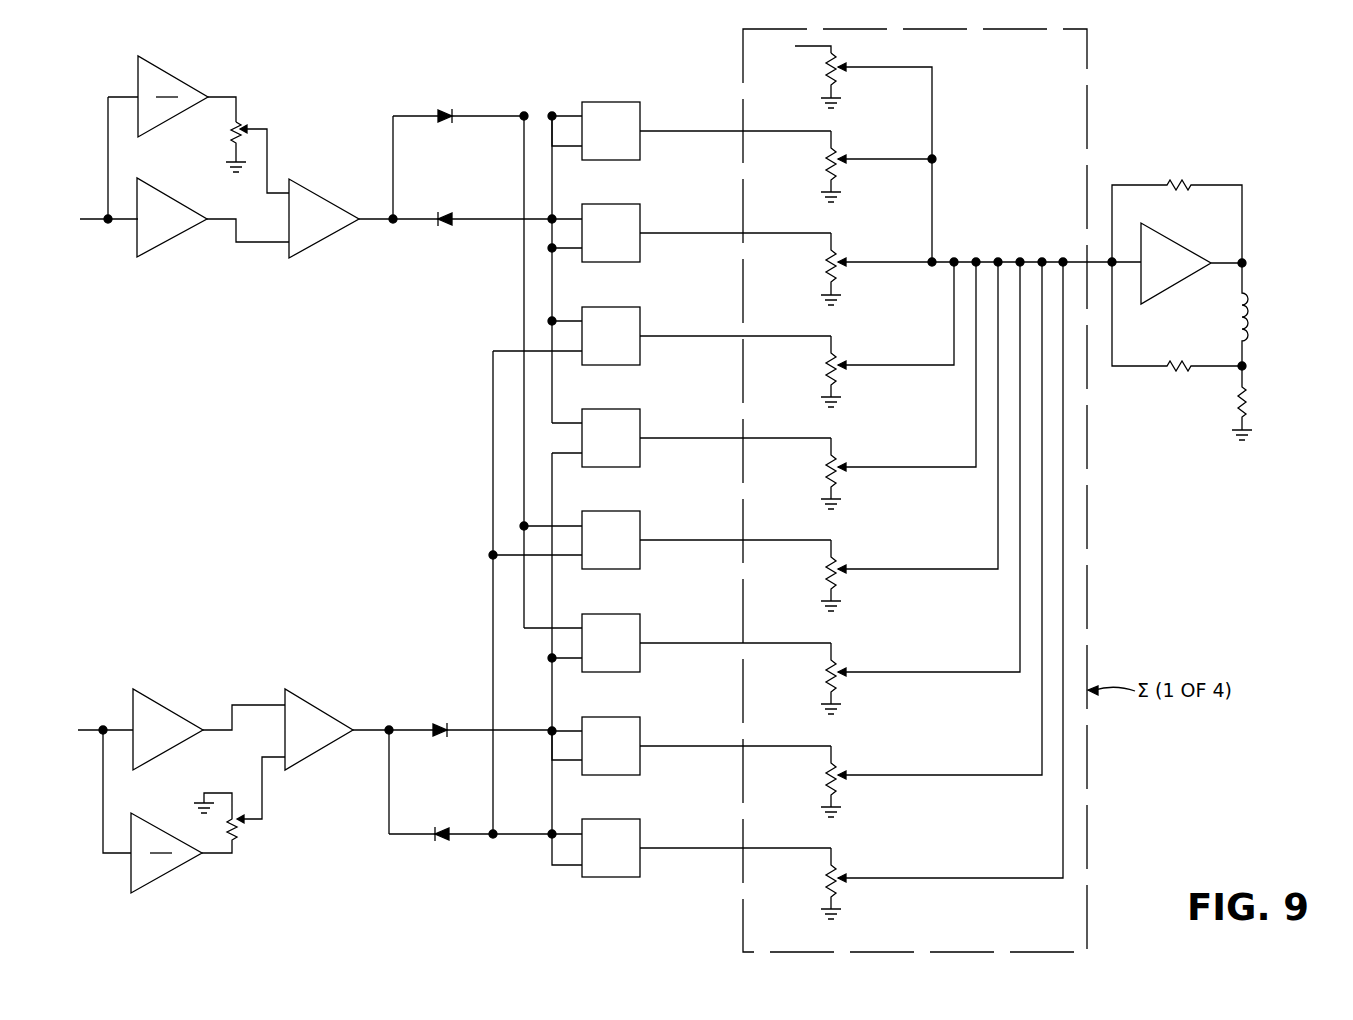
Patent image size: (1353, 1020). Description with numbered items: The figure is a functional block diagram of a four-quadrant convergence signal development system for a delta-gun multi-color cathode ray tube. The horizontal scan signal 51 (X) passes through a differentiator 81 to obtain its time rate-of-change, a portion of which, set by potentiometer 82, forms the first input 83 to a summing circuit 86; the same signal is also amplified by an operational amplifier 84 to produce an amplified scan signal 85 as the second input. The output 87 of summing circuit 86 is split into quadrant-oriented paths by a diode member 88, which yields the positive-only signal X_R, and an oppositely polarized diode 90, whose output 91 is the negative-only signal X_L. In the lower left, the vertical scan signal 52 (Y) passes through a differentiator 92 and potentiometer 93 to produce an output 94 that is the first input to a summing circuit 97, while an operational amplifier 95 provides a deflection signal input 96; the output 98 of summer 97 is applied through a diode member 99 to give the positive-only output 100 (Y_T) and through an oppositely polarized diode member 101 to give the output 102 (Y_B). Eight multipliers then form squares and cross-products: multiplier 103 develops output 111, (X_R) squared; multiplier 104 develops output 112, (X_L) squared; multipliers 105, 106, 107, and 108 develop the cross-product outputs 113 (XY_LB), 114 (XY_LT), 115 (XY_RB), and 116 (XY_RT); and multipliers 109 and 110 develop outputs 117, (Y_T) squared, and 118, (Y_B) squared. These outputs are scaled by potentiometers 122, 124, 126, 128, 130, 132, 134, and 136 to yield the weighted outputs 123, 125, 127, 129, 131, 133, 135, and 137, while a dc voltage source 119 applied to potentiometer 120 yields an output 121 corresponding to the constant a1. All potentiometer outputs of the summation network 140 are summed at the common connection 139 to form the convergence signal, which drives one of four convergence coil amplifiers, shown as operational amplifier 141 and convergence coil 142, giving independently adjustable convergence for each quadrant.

The horizontal scan signal 51 is at (90, 222).
The vertical scan signal 52 is at (102, 726).
The differentiator 81 is at (174, 78).
The potentiometer 82 is at (244, 122).
The first input 83 is at (268, 160).
The operational amplifier 84 is at (169, 196).
The amplified scan signal 85 is at (253, 243).
The summing circuit 86 is at (327, 200).
The output 87 is at (370, 223).
The diode member 88 is at (441, 110).
The diode 90 is at (444, 226).
The output 91 is at (491, 223).
The differentiator 92 is at (160, 836).
The potentiometer 93 is at (241, 829).
The output 94 is at (264, 800).
The operational amplifier 95 is at (167, 712).
The deflection signal input 96 is at (247, 704).
The summing circuit 97 is at (315, 712).
The output 98 is at (380, 727).
The diode member 99 is at (440, 724).
The output 100 is at (472, 735).
The diode member 101 is at (442, 841).
The output 102 is at (482, 840).
The multiplier 103 is at (611, 102).
The multiplier 104 is at (611, 204).
The multiplier 105 is at (611, 307).
The multiplier 106 is at (611, 409).
The multiplier 107 is at (611, 511).
The multiplier 108 is at (611, 614).
The multiplier 109 is at (611, 717).
The multiplier 110 is at (611, 819).
The output 111 is at (722, 134).
The output 112 is at (722, 236).
The output 113 is at (722, 339).
The output signal 114 is at (722, 441).
The output signal 115 is at (722, 543).
The output signal 116 is at (720, 646).
The output 117 is at (720, 749).
The output 118 is at (720, 851).
The dc voltage source 119 is at (833, 47).
The potentiometer 120 is at (846, 70).
The output 121 is at (934, 110).
The potentiometer 122 is at (826, 156).
The output 123 is at (880, 162).
The potentiometer 124 is at (826, 258).
The output 125 is at (880, 265).
The potentiometer 126 is at (826, 362).
The output 127 is at (888, 368).
The potentiometer 128 is at (826, 464).
The output 129 is at (888, 470).
The potentiometer 130 is at (826, 566).
The output 131 is at (888, 572).
The potentiometer 132 is at (826, 669).
The output 133 is at (888, 675).
The potentiometer 134 is at (826, 772).
The output 135 is at (888, 778).
The potentiometer 136 is at (826, 875).
The output 137 is at (888, 881).
The common connection 139 is at (1000, 258).
The summation network 140 is at (1087, 785).
The operational amplifier 141 is at (1176, 241).
The convergence coil 142 is at (1246, 318).